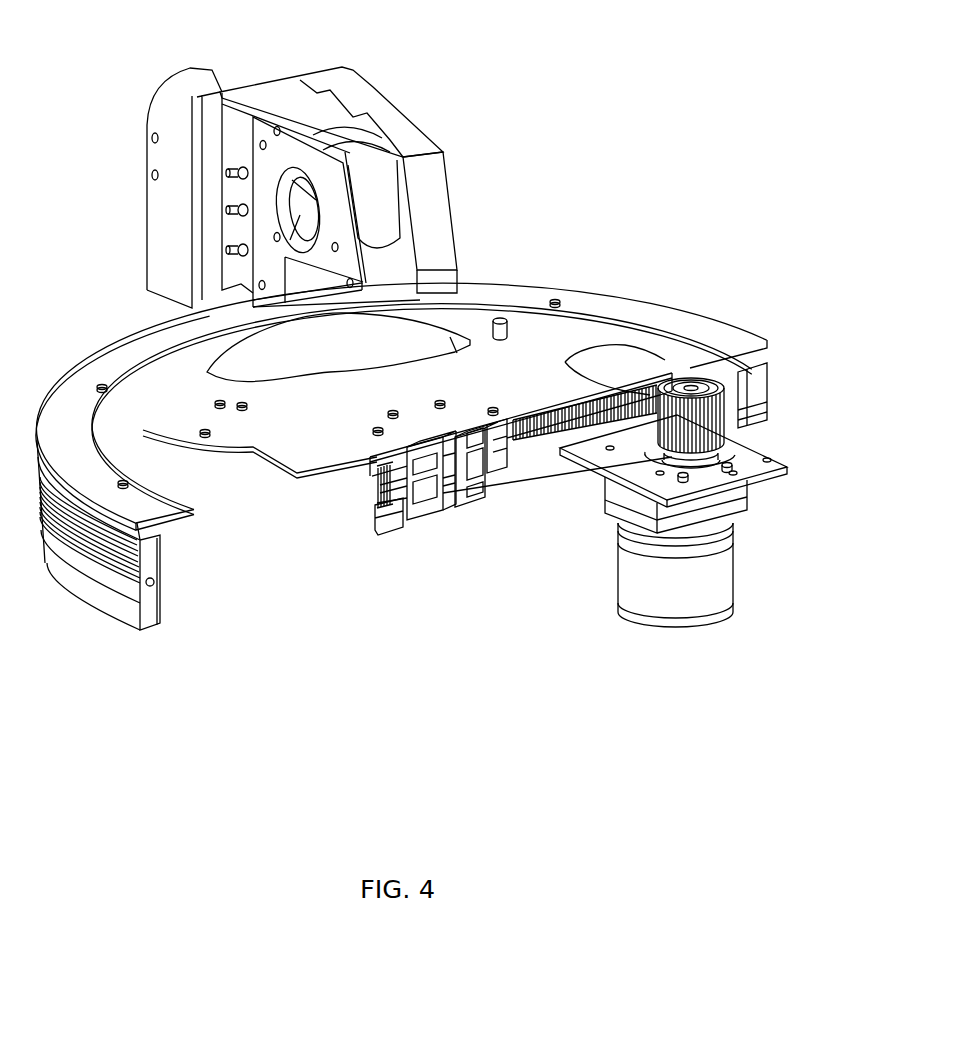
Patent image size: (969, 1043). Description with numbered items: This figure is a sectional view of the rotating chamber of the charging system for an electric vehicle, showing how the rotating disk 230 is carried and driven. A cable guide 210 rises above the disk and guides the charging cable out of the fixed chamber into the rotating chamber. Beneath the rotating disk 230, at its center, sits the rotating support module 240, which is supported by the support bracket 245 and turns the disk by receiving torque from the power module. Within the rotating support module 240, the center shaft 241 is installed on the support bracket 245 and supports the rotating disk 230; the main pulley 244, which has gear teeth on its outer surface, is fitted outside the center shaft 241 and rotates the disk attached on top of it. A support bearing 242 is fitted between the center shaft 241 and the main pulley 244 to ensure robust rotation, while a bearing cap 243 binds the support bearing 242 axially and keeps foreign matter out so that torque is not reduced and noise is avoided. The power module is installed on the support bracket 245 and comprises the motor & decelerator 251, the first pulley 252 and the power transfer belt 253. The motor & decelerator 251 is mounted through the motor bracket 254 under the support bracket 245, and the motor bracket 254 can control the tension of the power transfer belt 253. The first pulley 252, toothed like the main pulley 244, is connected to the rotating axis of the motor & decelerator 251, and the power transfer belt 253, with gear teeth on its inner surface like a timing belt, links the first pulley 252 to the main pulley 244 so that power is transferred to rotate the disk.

The cable guide 210 is at (412, 80).
The rotating disk 230 is at (177, 403).
The rotating support module 240 is at (480, 562).
The center shaft 241 is at (463, 490).
The support bearing 242 is at (413, 497).
The bearing cap 243 is at (380, 533).
The main pulley 244 is at (525, 503).
The support bracket 245 is at (545, 467).
The motor & decelerator 251 is at (705, 577).
The first pulley 252 is at (748, 378).
The power transfer belt 253 is at (625, 400).
The motor bracket 254 is at (758, 460).